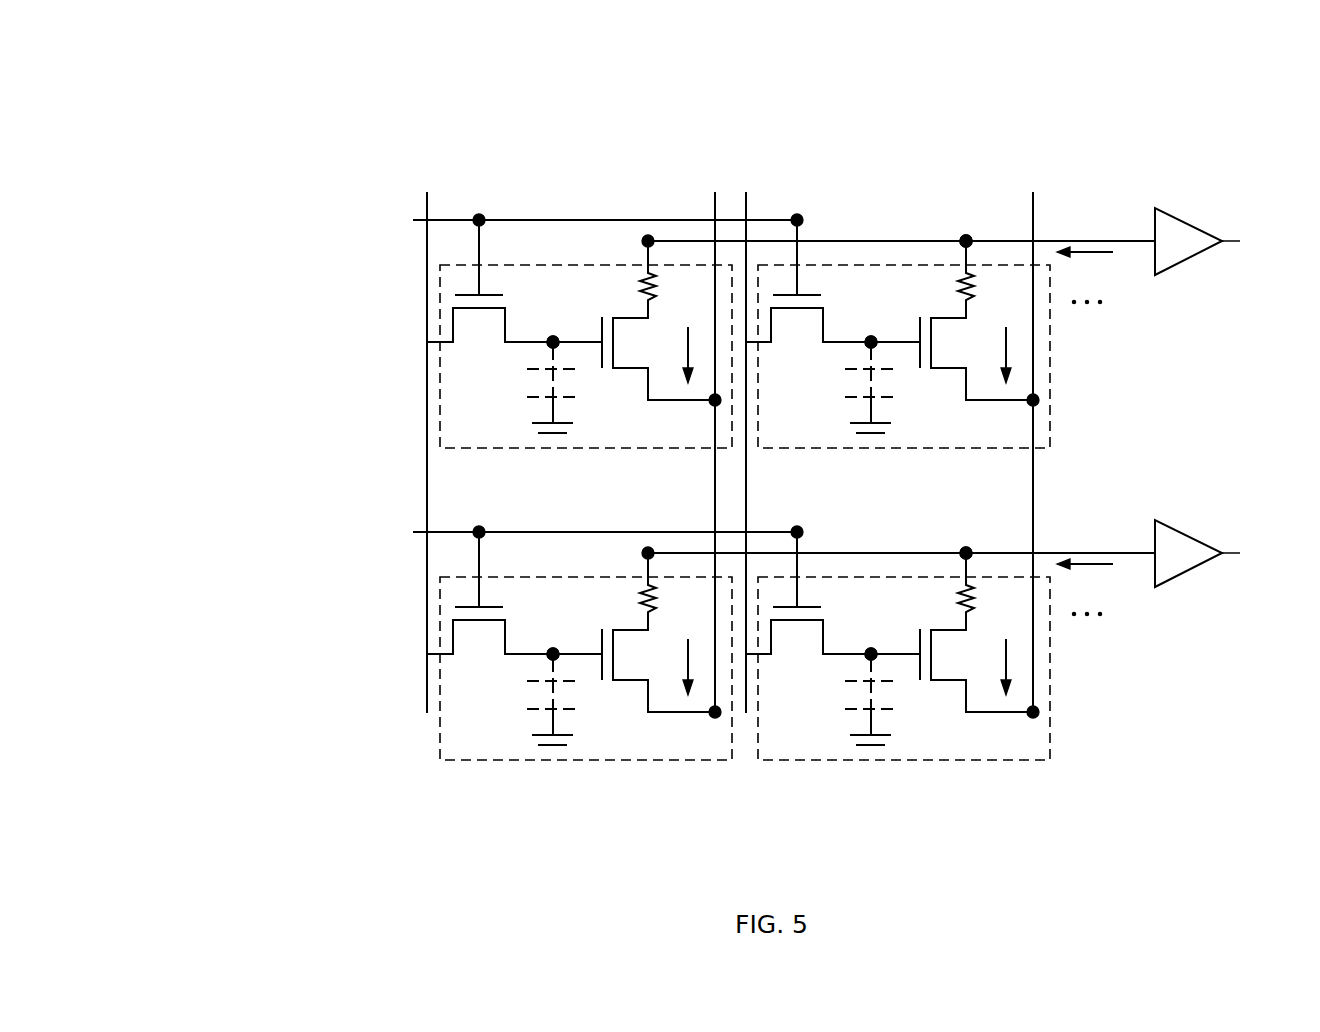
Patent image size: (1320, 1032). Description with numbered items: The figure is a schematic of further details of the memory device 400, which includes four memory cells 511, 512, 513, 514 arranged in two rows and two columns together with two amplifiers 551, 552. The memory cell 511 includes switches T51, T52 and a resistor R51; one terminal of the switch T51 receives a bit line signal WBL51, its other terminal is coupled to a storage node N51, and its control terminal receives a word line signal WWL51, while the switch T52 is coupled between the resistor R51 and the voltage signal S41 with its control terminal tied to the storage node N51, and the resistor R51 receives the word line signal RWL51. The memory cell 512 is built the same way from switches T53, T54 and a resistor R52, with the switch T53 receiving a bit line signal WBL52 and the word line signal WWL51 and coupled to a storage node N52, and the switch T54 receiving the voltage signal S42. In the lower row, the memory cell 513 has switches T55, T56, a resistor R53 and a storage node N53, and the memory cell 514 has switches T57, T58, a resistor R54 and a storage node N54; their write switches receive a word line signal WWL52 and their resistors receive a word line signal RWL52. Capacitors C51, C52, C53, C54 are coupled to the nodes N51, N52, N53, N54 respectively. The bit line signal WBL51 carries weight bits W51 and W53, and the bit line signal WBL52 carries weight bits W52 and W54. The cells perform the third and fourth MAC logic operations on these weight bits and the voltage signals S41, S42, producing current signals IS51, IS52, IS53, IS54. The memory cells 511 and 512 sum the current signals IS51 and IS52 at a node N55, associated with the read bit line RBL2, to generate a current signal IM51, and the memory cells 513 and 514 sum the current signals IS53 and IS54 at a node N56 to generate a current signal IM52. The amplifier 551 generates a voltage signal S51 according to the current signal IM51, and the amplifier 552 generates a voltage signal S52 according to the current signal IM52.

The memory device 400 is at (225, 42).
The bit line signal WBL51 is at (424, 436).
The bit line signal WBL52 is at (786, 436).
The voltage signal S41 is at (702, 436).
The voltage signal S42 is at (1036, 436).
The word line signal WWL51 is at (552, 221).
The word line signal WWL52 is at (552, 533).
The word line signal RWL51 is at (898, 228).
The word line signal RWL52 is at (898, 540).
The read bit line RBL2 is at (957, 218).
The node N55 is at (960, 239).
The node N56 is at (960, 551).
The amplifier 551 is at (1180, 217).
The amplifier 552 is at (1180, 529).
The voltage signal S51 is at (1256, 241).
The voltage signal S52 is at (1256, 553).
The current signal IM51 is at (1089, 275).
The current signal IM52 is at (1089, 587).
The memory cell 511 is at (527, 448).
The memory cell 512 is at (845, 448).
The memory cell 513 is at (527, 760).
The memory cell 514 is at (845, 760).
The switch T51 is at (490, 298).
The switch T52 is at (661, 354).
The switch T53 is at (808, 298).
The switch T54 is at (979, 354).
The switch T55 is at (490, 610).
The switch T56 is at (661, 666).
The switch T57 is at (808, 610).
The switch T58 is at (979, 666).
The weight bit W51 is at (562, 326).
The weight bit W52 is at (880, 326).
The weight bit W53 is at (562, 638).
The weight bit W54 is at (880, 638).
The resistor R51 is at (620, 273).
The resistor R52 is at (938, 273).
The resistor R53 is at (620, 585).
The resistor R54 is at (938, 585).
The current signal IS51 is at (685, 340).
The current signal IS52 is at (1003, 340).
The current signal IS53 is at (685, 652).
The current signal IS54 is at (1003, 652).
The capacitor C51 is at (532, 398).
The capacitor C52 is at (850, 398).
The capacitor C53 is at (532, 710).
The capacitor C54 is at (850, 710).
The storage node N51 is at (556, 345).
The storage node N52 is at (874, 345).
The storage node N53 is at (556, 657).
The storage node N54 is at (874, 657).